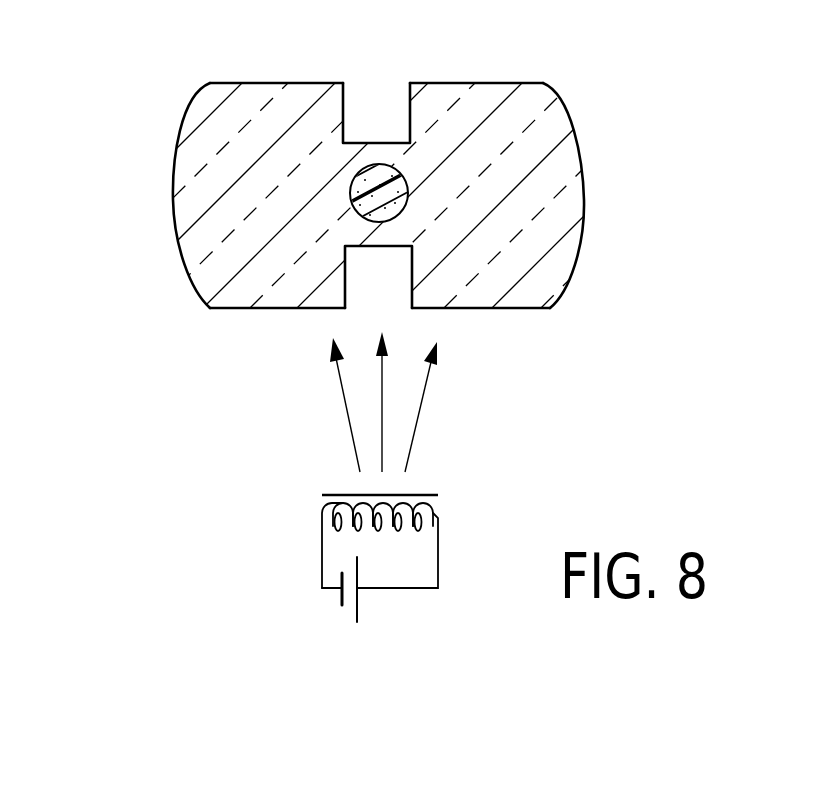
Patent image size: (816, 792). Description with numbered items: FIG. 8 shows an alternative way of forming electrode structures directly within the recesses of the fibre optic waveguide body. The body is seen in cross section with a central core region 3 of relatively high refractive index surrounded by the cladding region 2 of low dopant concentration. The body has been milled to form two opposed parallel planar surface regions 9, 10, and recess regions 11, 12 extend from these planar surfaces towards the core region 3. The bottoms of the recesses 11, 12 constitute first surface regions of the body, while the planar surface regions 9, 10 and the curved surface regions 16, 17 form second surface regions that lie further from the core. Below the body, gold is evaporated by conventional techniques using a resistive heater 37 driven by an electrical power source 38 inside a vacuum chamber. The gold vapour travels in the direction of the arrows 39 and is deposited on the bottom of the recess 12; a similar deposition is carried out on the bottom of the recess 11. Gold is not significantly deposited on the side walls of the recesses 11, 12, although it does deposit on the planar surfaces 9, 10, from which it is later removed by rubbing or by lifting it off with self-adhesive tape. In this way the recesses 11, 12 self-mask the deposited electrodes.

The cladding region 2 is at (578, 143).
The core region 3 is at (405, 180).
The planar surface region 9 is at (287, 83).
The planar surface region 10 is at (516, 308).
The recess region 11 is at (390, 143).
The recess region 12 is at (338, 298).
The curved surface region 16 is at (583, 212).
The curved surface region 17 is at (173, 203).
The resistive heater 37 is at (438, 495).
The electrical power source 38 is at (358, 603).
The arrows 39 is at (422, 408).